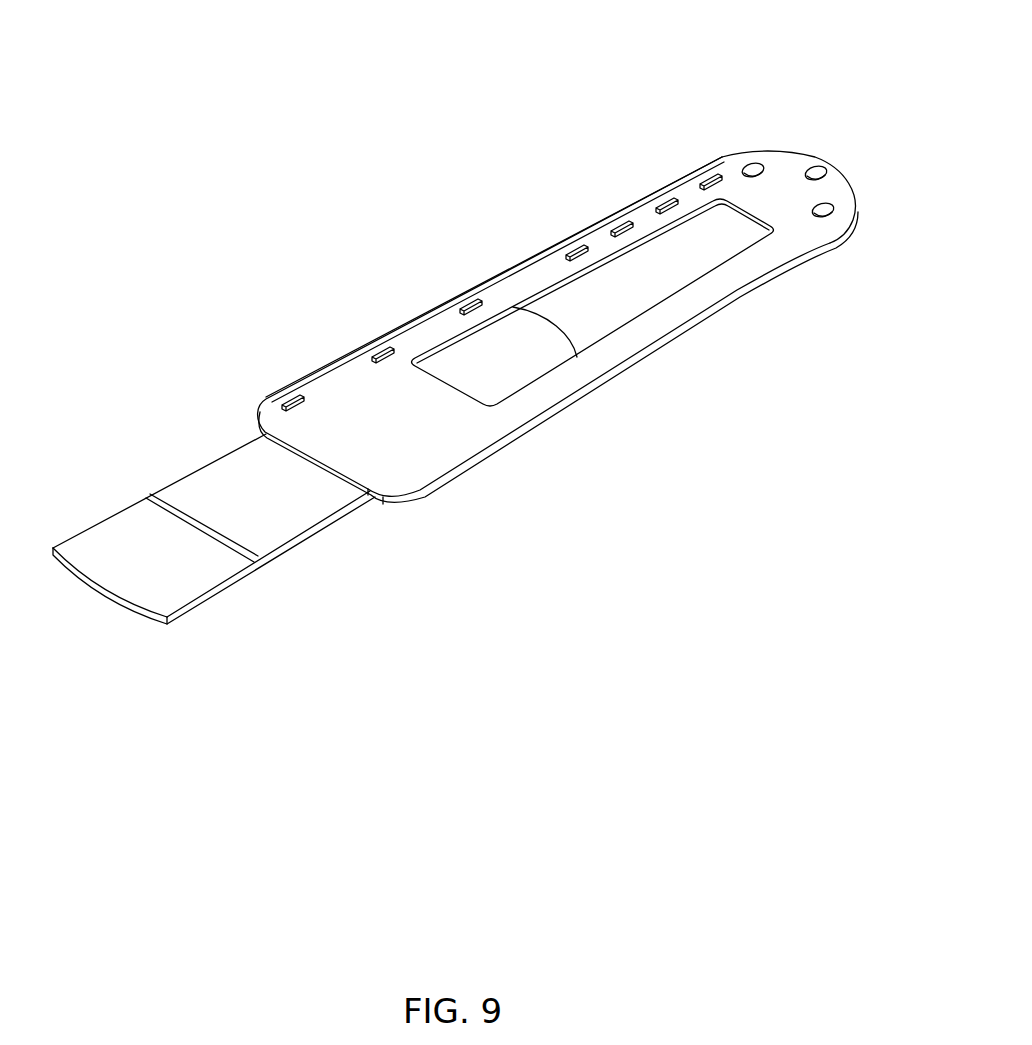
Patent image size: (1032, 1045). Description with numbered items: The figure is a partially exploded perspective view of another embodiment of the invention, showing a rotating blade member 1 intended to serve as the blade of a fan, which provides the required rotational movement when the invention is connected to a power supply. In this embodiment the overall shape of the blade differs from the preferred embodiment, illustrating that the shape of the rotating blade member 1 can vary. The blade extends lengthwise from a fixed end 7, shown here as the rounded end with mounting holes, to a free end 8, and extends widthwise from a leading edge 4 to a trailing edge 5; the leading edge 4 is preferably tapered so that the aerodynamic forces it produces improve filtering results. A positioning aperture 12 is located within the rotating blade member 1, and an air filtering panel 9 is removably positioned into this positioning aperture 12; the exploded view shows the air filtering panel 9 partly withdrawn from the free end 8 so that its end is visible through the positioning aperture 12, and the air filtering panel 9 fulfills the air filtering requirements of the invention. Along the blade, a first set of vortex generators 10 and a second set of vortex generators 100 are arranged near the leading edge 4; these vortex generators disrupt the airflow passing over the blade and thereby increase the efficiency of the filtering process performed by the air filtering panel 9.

The rotating blade member 1 is at (746, 101).
The leading edge 4 is at (547, 251).
The trailing edge 5 is at (608, 372).
The fixed end 7 is at (828, 162).
The free end 8 is at (385, 498).
The air filtering panel 9 is at (271, 501).
The first set of vortex generators 10 is at (706, 180).
The positioning aperture 12 is at (716, 252).
The second set of vortex generators 100 is at (472, 303).